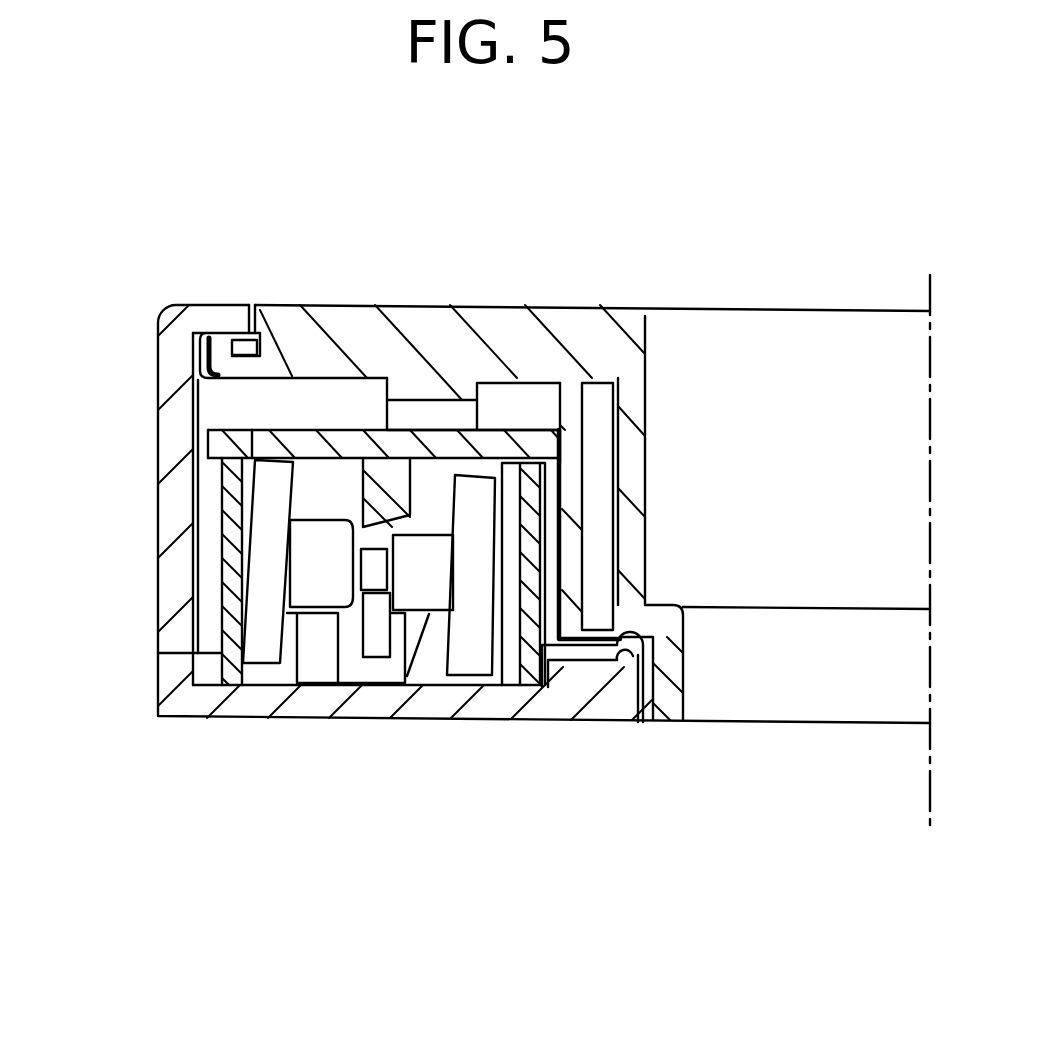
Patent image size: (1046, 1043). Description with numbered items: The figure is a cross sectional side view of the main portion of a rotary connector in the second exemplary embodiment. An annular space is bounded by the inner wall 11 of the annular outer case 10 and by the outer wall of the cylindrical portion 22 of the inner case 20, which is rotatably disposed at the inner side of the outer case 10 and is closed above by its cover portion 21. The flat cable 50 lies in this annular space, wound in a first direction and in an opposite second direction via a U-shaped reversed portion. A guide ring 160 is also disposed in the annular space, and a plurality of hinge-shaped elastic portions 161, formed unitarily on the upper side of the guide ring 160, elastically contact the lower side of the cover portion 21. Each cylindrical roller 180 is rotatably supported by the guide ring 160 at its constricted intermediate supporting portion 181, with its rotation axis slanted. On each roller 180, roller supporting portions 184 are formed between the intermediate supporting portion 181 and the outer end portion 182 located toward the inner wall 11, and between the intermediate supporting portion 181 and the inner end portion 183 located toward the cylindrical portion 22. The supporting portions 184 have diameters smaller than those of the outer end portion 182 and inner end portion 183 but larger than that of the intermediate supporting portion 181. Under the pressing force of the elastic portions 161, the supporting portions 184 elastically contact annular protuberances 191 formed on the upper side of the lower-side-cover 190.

The outer case 10 is at (172, 442).
The inner wall 11 is at (193, 513).
The inner case 20 is at (592, 460).
The cover portion 21 is at (505, 337).
The cylindrical portion 22 is at (575, 480).
The flat cable 50 is at (228, 591).
The guide ring 160 is at (220, 430).
The hinge-shaped elastic portions 161 is at (403, 405).
The cylindrical roller 180 is at (340, 726).
The intermediate supporting portion 181 is at (381, 593).
The outer end portion 182 is at (262, 640).
The inner end portion 183 is at (515, 691).
The roller supporting portions 184 is at (327, 597).
The lower-side-cover 190 is at (608, 700).
The annular-protuberances 191 is at (415, 617).